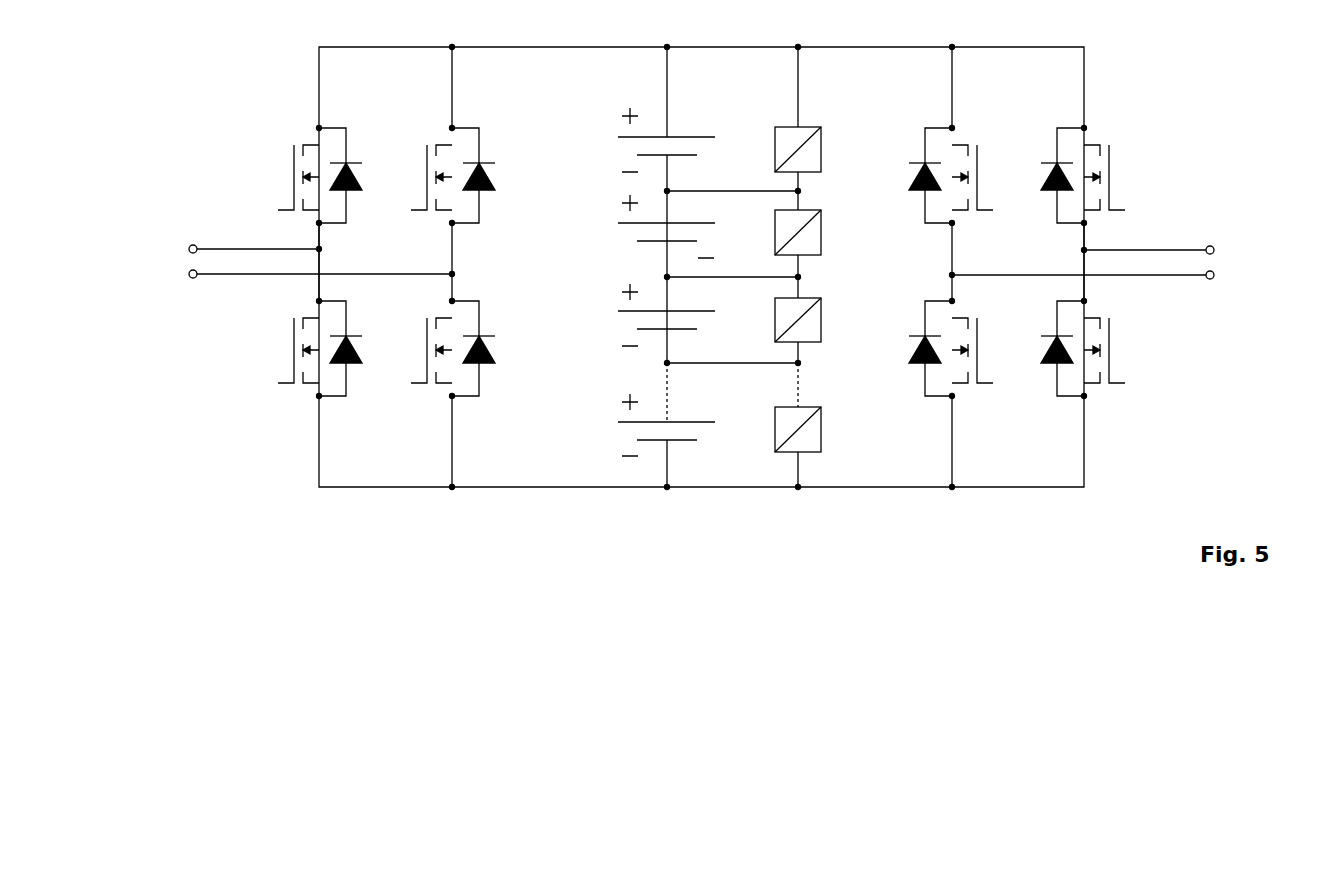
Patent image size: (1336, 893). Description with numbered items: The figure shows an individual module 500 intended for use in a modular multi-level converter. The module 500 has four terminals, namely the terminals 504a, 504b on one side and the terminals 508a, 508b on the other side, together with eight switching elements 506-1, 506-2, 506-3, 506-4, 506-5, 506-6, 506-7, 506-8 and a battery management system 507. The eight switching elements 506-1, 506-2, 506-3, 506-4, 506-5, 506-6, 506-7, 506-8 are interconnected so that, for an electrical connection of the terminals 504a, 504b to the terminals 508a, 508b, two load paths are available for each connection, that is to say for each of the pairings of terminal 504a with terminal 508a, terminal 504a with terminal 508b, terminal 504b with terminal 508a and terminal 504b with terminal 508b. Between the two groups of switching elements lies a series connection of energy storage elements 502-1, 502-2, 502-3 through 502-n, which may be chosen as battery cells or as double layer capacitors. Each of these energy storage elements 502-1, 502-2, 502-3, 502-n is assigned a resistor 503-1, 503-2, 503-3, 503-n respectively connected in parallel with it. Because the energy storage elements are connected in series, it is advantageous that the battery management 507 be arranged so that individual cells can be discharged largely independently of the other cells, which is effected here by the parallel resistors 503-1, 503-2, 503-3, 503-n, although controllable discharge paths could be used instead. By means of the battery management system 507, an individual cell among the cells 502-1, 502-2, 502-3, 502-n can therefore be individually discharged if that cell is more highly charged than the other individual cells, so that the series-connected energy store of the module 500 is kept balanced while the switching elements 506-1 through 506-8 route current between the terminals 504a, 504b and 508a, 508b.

The individual module 500 is at (216, 461).
The energy storage element 502-1 is at (620, 148).
The energy storage element 502-2 is at (620, 236).
The energy storage element 502-3 is at (620, 323).
The energy storage element 502-n is at (620, 438).
The resistor 503-1 is at (822, 148).
The resistor 503-2 is at (822, 232).
The resistor 503-3 is at (822, 320).
The resistor 503-n is at (822, 432).
The terminal 504a is at (189, 248).
The terminal 504b is at (189, 276).
The switching element 506-1 is at (292, 178).
The switching element 506-2 is at (292, 352).
The switching element 506-3 is at (425, 177).
The switching element 506-4 is at (425, 352).
The switching element 506-5 is at (978, 177).
The switching element 506-6 is at (978, 352).
The switching element 506-7 is at (1112, 180).
The switching element 506-8 is at (1112, 352).
The battery management system 507 is at (843, 497).
The terminal 508a is at (1214, 249).
The terminal 508b is at (1214, 277).